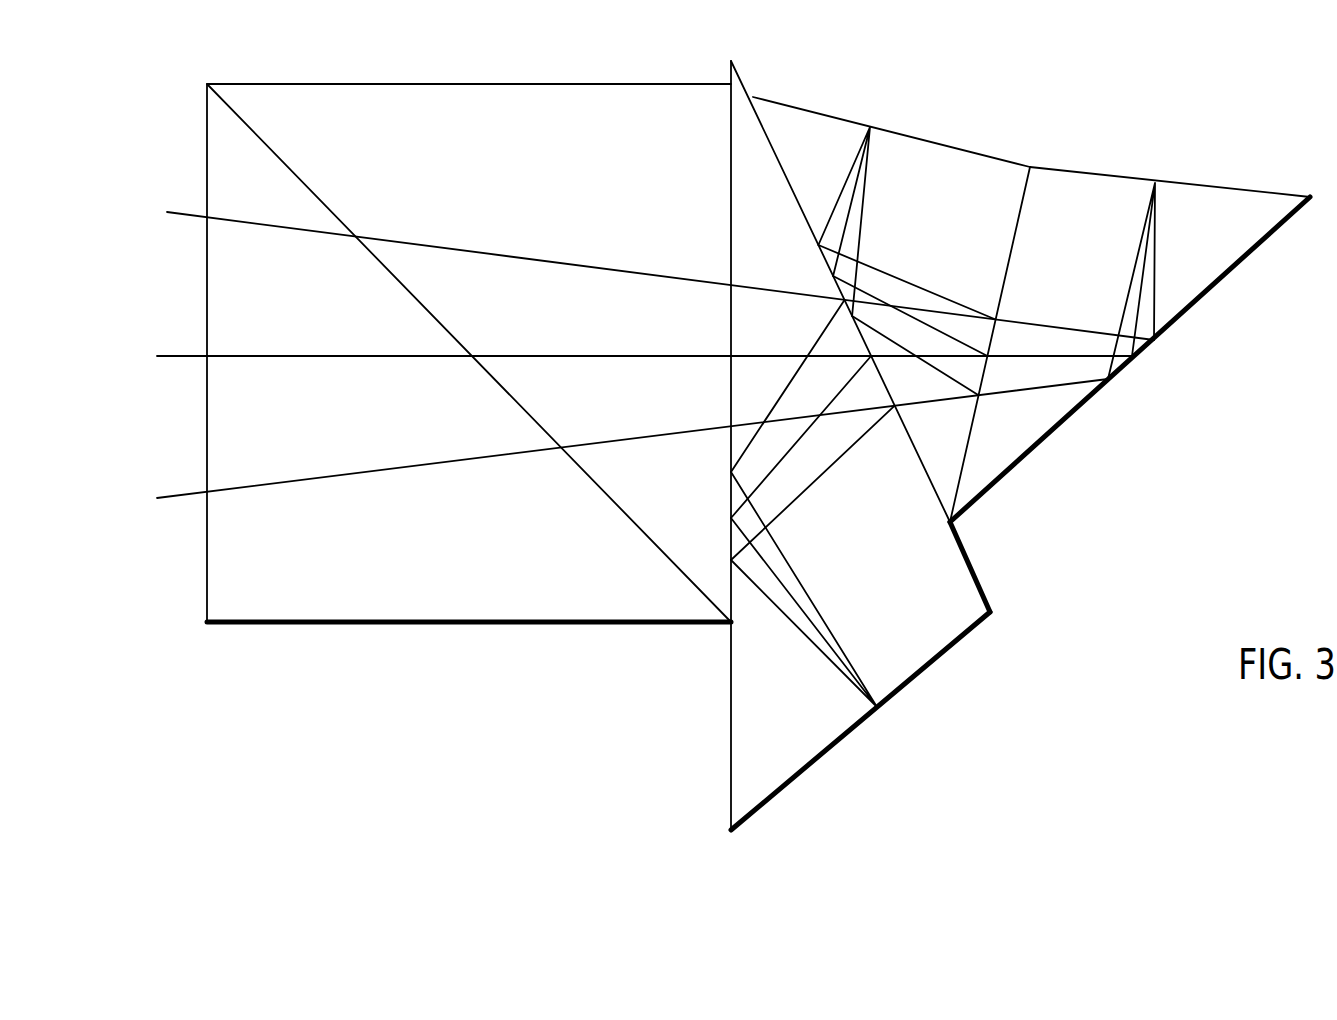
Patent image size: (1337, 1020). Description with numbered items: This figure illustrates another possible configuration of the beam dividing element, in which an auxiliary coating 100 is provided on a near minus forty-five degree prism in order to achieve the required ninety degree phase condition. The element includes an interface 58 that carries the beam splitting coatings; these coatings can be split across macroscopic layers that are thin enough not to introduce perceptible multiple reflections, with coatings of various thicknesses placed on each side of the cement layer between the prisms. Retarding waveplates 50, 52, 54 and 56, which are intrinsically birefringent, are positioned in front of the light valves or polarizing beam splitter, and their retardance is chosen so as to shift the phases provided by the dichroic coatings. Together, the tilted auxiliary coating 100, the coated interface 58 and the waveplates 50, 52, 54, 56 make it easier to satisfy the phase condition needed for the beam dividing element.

The waveplate 50 is at (1212, 184).
The waveplate 52 is at (992, 156).
The waveplate 54 is at (962, 638).
The waveplate 56 is at (728, 624).
The interface 58 is at (665, 562).
The auxiliary coating 100 is at (1052, 440).